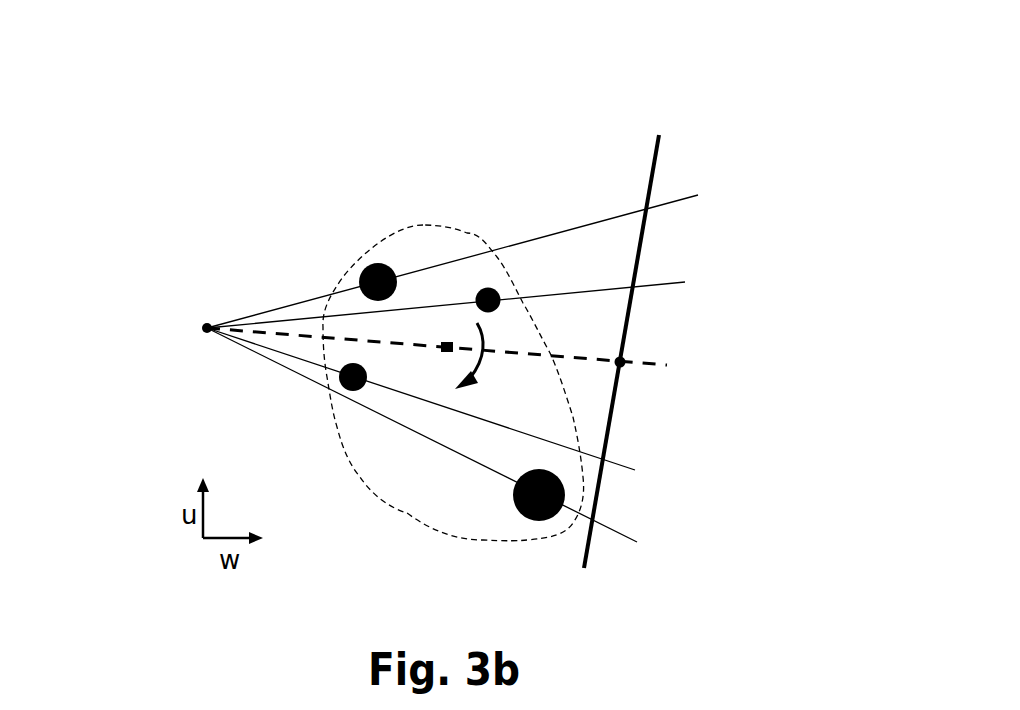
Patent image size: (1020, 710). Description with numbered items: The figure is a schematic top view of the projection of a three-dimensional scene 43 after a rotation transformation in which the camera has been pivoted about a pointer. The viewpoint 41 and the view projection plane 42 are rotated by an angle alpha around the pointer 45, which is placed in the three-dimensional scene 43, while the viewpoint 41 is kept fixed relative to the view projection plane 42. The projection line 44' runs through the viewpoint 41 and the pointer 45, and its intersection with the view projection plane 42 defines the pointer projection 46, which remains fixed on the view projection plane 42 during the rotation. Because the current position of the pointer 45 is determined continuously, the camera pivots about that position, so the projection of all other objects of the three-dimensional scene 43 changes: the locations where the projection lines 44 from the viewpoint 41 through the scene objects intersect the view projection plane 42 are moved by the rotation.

The viewpoint 41 is at (203, 325).
The view projection plane 42 is at (647, 182).
The three-dimensional scene 43 is at (378, 238).
The projection lines 44 is at (460, 368).
The projection line 44' is at (437, 336).
The pointer 45 is at (448, 340).
The pointer projection 46 is at (628, 355).